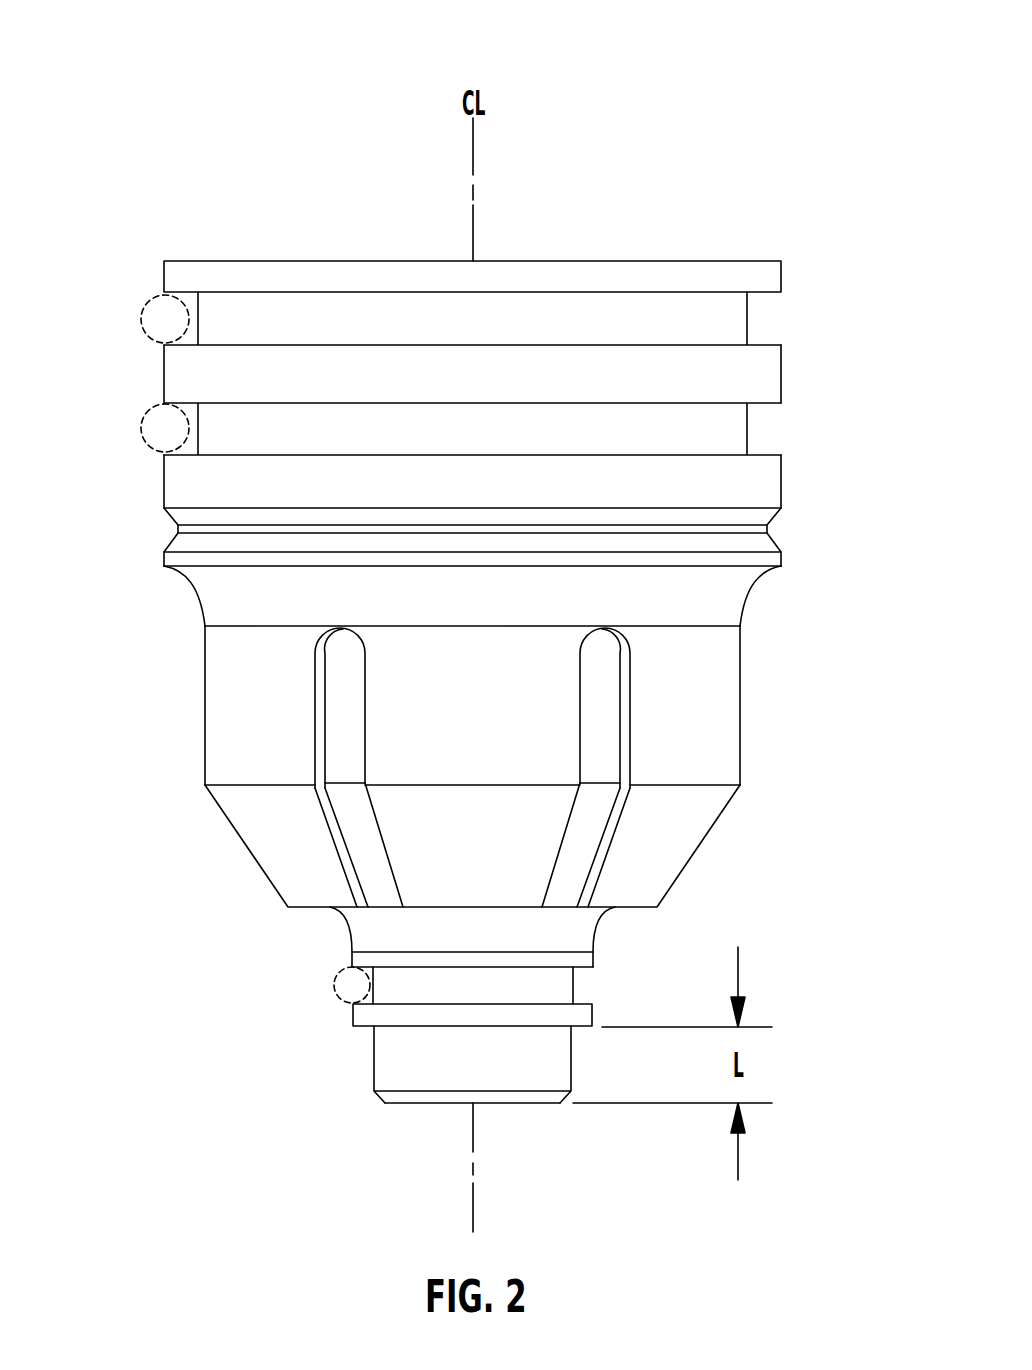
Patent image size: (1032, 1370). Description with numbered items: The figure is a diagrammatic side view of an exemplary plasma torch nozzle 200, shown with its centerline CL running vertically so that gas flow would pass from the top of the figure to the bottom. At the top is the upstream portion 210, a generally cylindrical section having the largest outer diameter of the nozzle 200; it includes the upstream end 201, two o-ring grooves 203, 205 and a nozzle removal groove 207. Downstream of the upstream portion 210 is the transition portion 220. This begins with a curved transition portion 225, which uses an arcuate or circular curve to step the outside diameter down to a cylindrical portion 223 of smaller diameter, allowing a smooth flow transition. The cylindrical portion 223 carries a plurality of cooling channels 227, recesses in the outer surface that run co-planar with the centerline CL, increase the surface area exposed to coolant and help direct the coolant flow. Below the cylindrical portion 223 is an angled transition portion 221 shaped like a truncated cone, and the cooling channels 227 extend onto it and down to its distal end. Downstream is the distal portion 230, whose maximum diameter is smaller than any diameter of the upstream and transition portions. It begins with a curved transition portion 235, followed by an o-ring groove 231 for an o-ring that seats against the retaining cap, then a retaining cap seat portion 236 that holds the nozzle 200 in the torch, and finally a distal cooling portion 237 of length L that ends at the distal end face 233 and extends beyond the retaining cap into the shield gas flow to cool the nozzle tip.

The nozzle 200 is at (771, 107).
The upstream end 201 is at (365, 261).
The o-ring groove 203 is at (747, 318).
The o-ring groove 205 is at (747, 430).
The nozzle removal groove 207 is at (767, 530).
The upstream portion 210 is at (145, 262).
The transition portion 220 is at (150, 569).
The angled transition portion 221 is at (717, 821).
The cylindrical portion 223 is at (738, 695).
The curved transition portion 225 is at (758, 583).
The cooling channels 227 is at (612, 797).
The distal portion 230 is at (247, 905).
The o-ring groove 231 is at (573, 983).
The distal end face 233 is at (525, 1104).
The curved transition portion 235 is at (331, 915).
The retaining cap seat portion 236 is at (352, 1015).
The distal cooling portion 237 is at (373, 1070).